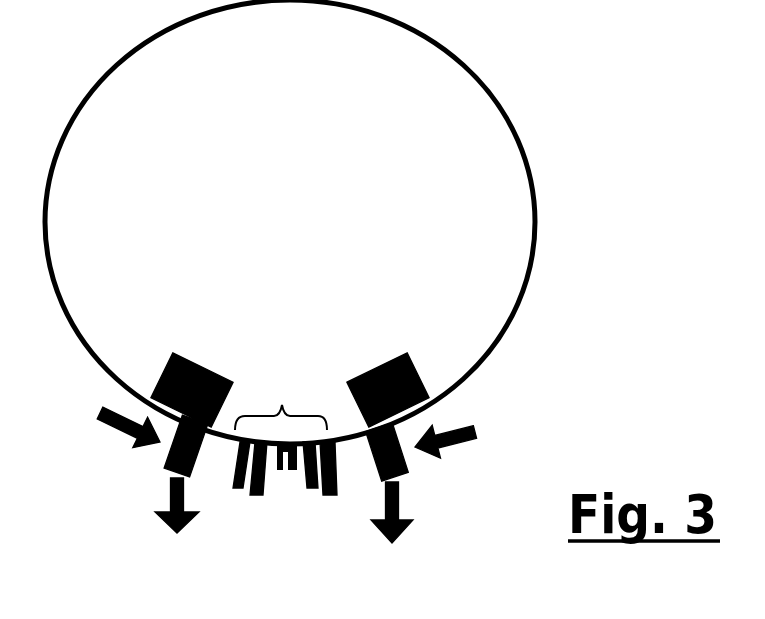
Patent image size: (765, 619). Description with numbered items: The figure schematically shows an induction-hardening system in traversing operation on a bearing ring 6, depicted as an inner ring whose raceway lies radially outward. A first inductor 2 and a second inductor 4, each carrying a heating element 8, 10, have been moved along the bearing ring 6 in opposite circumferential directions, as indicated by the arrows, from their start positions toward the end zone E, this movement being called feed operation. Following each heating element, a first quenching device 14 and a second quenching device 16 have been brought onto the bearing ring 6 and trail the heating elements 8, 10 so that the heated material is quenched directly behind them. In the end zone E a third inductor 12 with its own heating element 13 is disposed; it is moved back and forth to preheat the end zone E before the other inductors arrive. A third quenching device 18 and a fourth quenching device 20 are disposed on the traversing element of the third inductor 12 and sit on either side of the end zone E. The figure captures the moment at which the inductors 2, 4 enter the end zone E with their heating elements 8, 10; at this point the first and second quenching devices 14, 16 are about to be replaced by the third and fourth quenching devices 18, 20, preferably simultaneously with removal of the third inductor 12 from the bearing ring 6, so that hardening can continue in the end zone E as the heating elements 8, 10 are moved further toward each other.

The bearing ring 6 is at (537, 187).
The third quenching device 18 is at (207, 372).
The fourth quenching device 20 is at (377, 370).
The first quenching device 14 is at (168, 467).
The second quenching device 16 is at (403, 476).
The first inductor 2 is at (188, 482).
The second inductor 4 is at (385, 492).
The heating element 8 is at (200, 492).
The heating element 10 is at (372, 493).
The third inductor 12 is at (290, 472).
The heating element 13 is at (287, 456).
The end zone E is at (281, 396).